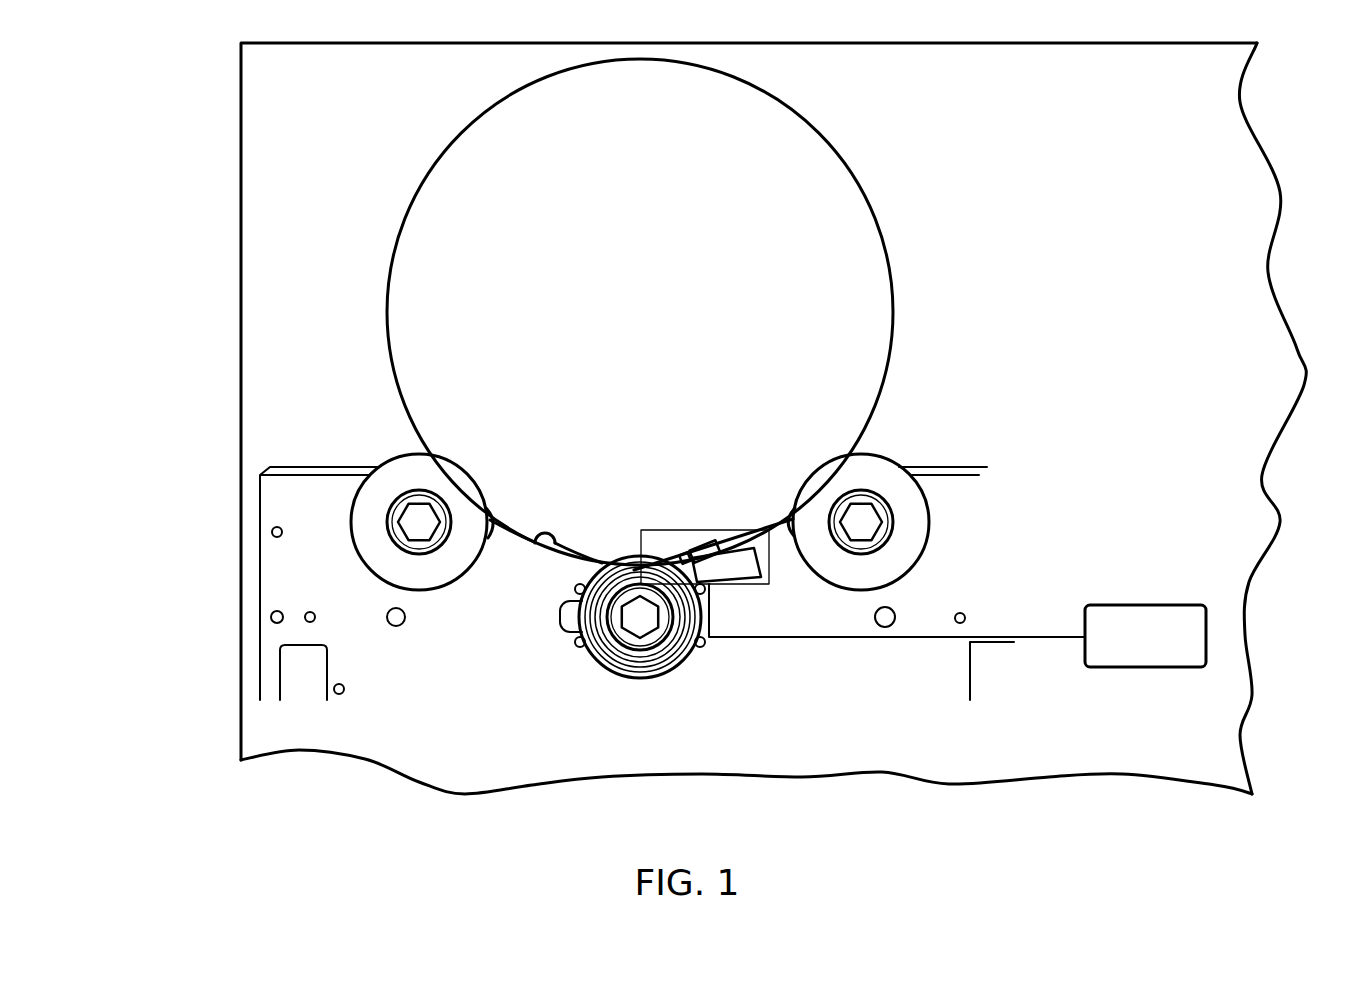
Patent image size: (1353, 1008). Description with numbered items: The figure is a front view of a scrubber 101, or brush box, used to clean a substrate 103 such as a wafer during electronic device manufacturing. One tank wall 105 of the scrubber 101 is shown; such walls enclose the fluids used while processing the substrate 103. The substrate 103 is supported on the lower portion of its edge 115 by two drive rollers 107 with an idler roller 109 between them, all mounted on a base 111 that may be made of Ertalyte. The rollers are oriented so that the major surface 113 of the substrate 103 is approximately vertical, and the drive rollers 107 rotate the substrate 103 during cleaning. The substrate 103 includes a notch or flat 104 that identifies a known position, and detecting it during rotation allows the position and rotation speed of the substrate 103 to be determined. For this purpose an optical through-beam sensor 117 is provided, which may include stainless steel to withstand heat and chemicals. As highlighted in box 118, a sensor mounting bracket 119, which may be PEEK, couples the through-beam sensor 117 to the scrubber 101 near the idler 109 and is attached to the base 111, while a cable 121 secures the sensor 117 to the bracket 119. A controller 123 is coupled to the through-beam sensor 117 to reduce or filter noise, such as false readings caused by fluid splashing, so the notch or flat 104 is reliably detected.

The scrubber 101 is at (138, 178).
The substrate 103 is at (877, 222).
The notch or flat 104 is at (535, 560).
The tank wall 105 is at (239, 345).
The drive roller 107 is at (398, 452).
The idler roller 109 is at (628, 672).
The base 111 is at (965, 500).
The major surface 113 is at (656, 278).
The edge 115 is at (905, 350).
The through-beam sensor 117 is at (703, 545).
The box 118 is at (652, 528).
The sensor mounting bracket 119 is at (743, 568).
The cable 121 is at (663, 553).
The controller 123 is at (1205, 635).